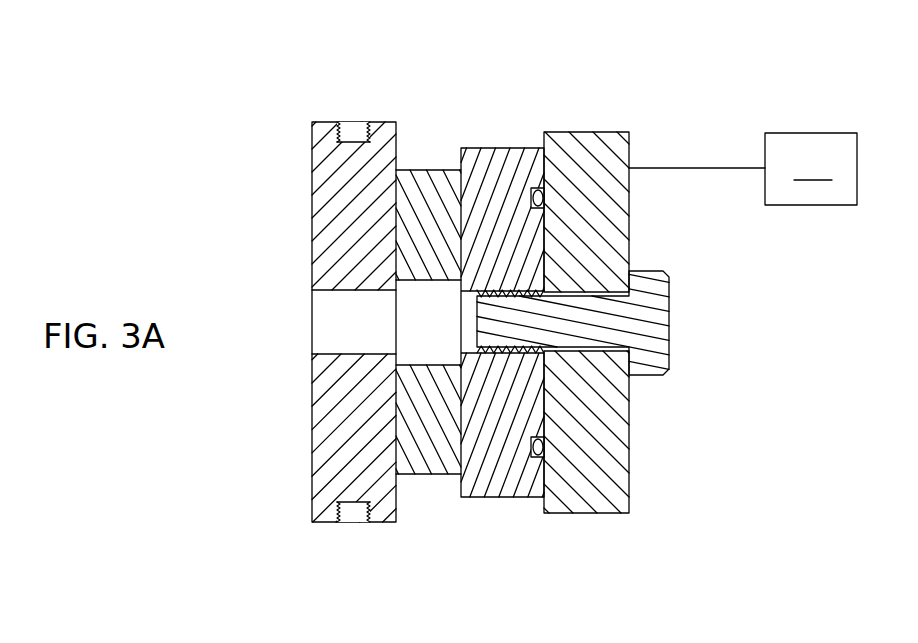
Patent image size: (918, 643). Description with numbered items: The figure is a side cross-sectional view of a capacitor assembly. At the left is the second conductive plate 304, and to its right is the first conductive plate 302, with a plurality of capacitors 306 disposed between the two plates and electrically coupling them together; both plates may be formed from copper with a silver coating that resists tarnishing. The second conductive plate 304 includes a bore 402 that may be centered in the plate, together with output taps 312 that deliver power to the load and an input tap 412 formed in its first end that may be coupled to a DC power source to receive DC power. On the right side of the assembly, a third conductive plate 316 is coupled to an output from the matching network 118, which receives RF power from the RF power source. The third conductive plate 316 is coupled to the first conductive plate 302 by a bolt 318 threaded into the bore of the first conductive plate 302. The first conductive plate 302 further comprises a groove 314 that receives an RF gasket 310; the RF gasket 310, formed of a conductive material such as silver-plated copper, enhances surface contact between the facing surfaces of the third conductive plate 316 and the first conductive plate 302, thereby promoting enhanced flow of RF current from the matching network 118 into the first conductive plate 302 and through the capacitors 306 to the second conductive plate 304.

The matching network 118 is at (743, 169).
The first conductive plate 302 is at (486, 147).
The second conductive plate 304 is at (312, 200).
The capacitors 306 is at (420, 170).
The RF gasket 310 is at (543, 198).
The output tap 312 is at (352, 121).
The groove 314 is at (531, 192).
The third conductive plate 316 is at (602, 132).
The bolt 318 is at (670, 312).
The bore 402 is at (325, 291).
The input tap 412 is at (342, 513).